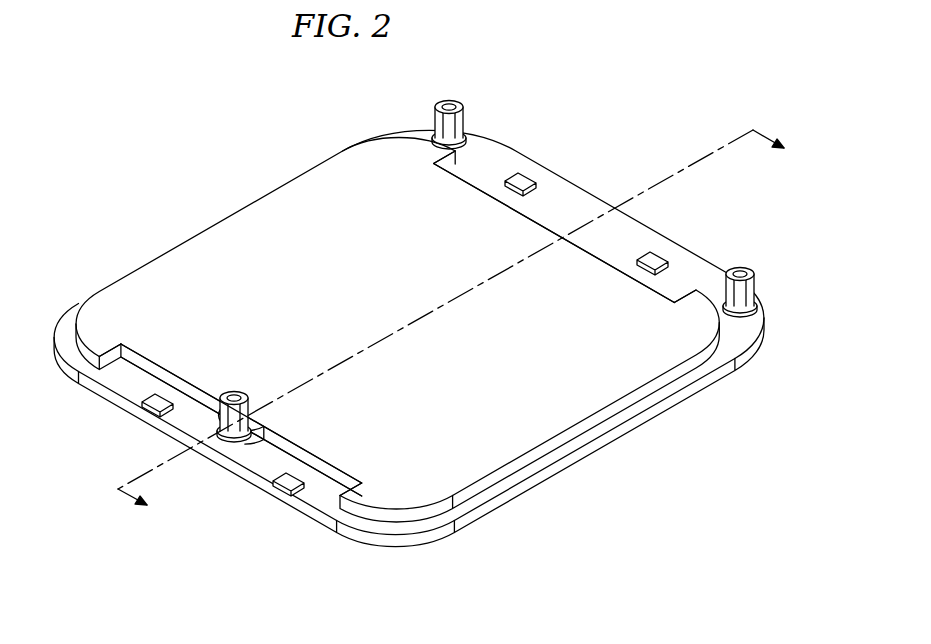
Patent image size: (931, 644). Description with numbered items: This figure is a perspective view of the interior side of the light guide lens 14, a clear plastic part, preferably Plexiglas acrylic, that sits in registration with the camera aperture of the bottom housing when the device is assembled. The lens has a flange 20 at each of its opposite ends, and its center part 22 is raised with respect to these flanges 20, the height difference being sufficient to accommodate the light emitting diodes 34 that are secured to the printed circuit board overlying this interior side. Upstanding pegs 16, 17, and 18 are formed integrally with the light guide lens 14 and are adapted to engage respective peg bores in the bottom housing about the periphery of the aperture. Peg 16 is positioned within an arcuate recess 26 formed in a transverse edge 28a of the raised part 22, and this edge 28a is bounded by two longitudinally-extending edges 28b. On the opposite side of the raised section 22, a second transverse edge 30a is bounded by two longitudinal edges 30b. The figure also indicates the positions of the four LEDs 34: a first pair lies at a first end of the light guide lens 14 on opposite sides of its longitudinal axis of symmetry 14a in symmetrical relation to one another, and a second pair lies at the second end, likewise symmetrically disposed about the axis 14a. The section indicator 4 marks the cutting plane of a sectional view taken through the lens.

The light guide lens 14 is at (590, 191).
The longitudinal axis of symmetry 14a is at (487, 278).
The peg 16 is at (240, 394).
The peg 17 is at (452, 103).
The peg 18 is at (736, 270).
The flange 20 is at (563, 208).
The center part 22 is at (361, 252).
The arcuate recess 26 is at (263, 428).
The transverse edge 28a is at (265, 450).
The longitudinally-extending edge 28b is at (118, 362).
The second transverse edge 30a is at (600, 257).
The longitudinal edge 30b is at (457, 163).
The light emitting diodes 34 is at (524, 176).
The section line 4- 4 is at (459, 327).